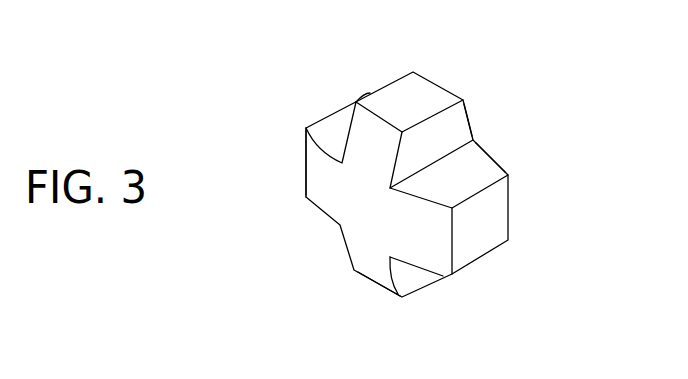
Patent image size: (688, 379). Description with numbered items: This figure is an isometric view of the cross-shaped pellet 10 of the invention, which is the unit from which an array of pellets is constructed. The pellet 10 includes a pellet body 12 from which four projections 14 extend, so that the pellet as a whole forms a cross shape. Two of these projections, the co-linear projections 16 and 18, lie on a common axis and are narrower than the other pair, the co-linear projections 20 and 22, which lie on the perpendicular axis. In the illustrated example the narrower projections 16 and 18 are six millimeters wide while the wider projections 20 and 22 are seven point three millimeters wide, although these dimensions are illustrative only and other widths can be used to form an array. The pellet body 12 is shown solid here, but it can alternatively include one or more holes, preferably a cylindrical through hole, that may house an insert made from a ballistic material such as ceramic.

The pellet 10 is at (373, 33).
The pellet body 12 is at (357, 216).
The projections 14 is at (452, 93).
The co-linear projection 16 is at (435, 82).
The co-linear projection 18 is at (425, 283).
The co-linear projection 20 is at (318, 121).
The co-linear projection 22 is at (505, 228).